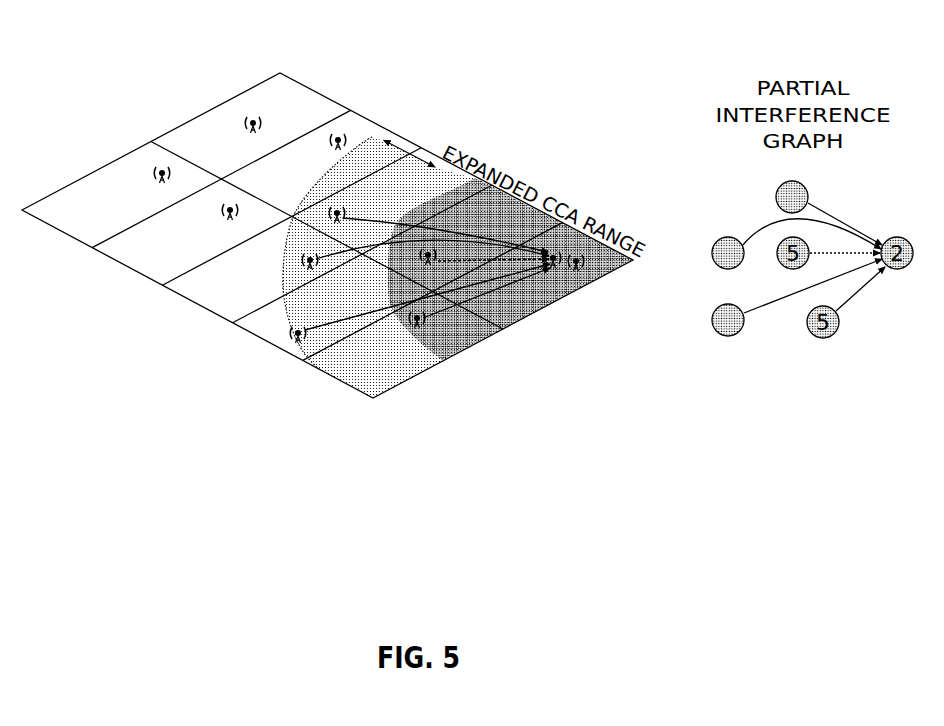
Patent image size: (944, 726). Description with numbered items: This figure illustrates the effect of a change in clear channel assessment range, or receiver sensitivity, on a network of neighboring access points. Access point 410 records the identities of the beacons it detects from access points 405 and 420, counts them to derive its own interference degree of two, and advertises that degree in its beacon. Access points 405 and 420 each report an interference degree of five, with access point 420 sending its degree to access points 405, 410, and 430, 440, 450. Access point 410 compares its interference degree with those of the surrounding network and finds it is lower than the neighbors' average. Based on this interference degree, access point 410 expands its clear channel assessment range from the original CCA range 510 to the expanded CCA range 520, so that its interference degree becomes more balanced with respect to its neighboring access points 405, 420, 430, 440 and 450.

The access point 405 is at (427, 262).
The access point 410 is at (581, 276).
The access point 420 is at (410, 330).
The access point 430 is at (294, 337).
The access point 440 is at (303, 266).
The access point 450 is at (338, 210).
The CCA range 510 is at (473, 165).
The expanded CCA range 520 is at (386, 140).